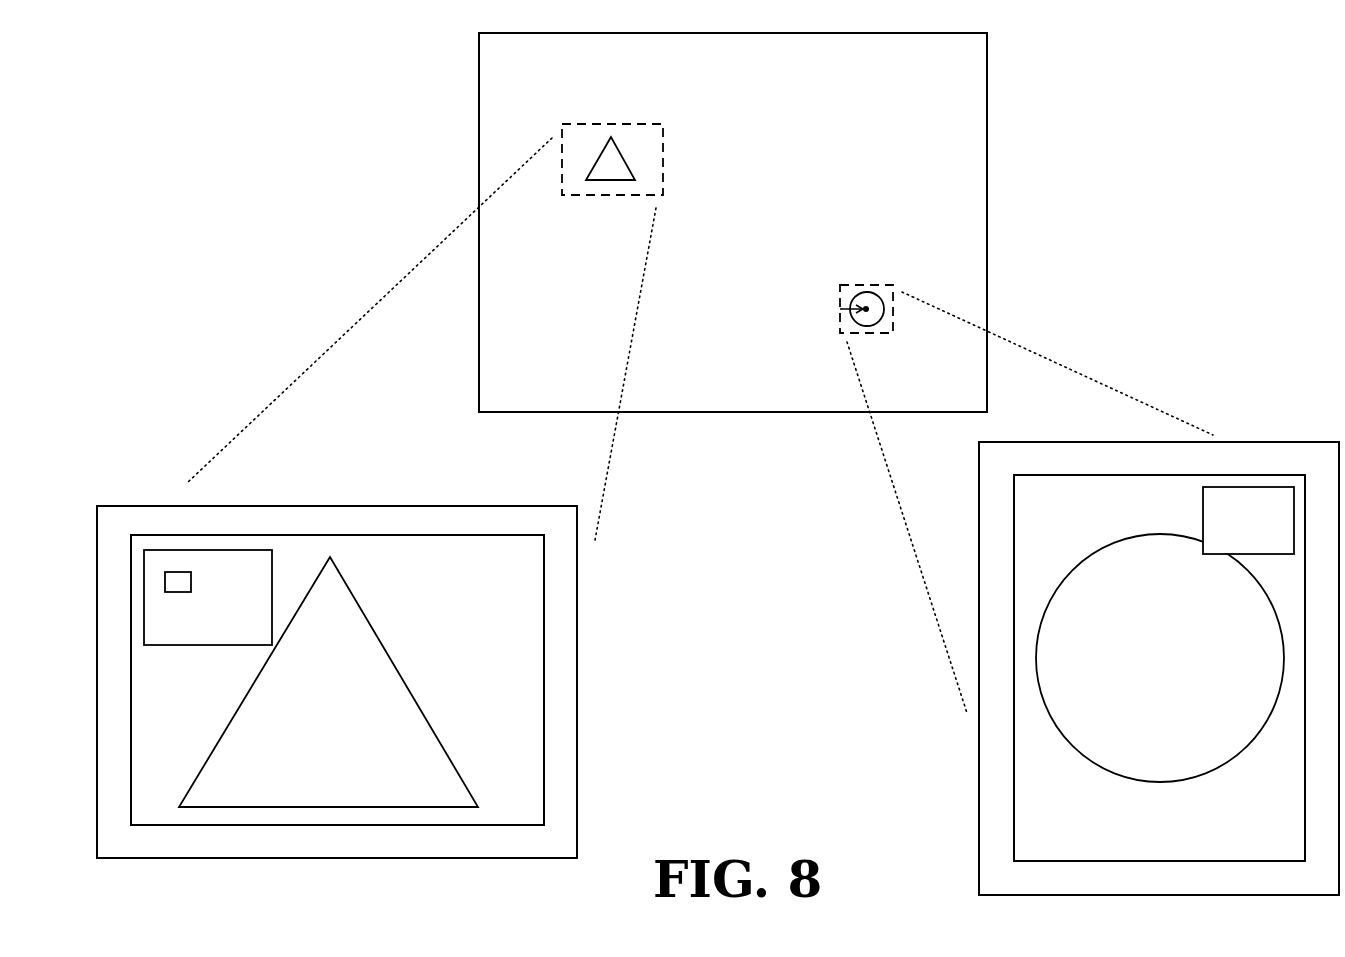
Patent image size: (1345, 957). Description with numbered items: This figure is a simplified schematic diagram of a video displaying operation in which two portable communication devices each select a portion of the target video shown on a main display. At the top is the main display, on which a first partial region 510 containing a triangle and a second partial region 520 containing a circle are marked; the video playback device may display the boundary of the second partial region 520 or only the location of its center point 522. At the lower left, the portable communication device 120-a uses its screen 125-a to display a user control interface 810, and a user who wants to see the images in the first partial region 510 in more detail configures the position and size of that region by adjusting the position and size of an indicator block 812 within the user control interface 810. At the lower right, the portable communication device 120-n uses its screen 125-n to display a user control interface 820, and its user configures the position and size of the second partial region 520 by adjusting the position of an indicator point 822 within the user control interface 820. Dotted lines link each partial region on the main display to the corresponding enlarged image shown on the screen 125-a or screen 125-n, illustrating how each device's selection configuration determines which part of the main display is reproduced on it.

The first partial region 510 is at (663, 158).
The second partial region 520 is at (866, 285).
The center point 522 is at (840, 309).
The portable communication device 120-a is at (577, 682).
The screen 125-a is at (544, 764).
The user control interface 810 is at (208, 645).
The indicator block 812 is at (178, 572).
The portable communication device 120-n is at (978, 750).
The screen 125-n is at (1014, 802).
The user control interface 820 is at (1247, 487).
The indicator point 822 is at (1262, 535).